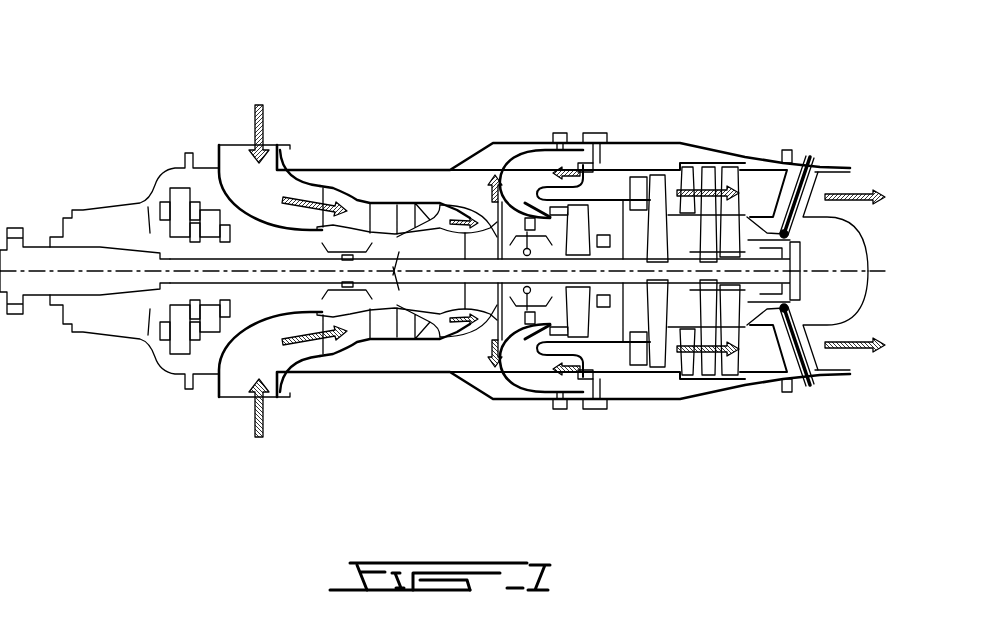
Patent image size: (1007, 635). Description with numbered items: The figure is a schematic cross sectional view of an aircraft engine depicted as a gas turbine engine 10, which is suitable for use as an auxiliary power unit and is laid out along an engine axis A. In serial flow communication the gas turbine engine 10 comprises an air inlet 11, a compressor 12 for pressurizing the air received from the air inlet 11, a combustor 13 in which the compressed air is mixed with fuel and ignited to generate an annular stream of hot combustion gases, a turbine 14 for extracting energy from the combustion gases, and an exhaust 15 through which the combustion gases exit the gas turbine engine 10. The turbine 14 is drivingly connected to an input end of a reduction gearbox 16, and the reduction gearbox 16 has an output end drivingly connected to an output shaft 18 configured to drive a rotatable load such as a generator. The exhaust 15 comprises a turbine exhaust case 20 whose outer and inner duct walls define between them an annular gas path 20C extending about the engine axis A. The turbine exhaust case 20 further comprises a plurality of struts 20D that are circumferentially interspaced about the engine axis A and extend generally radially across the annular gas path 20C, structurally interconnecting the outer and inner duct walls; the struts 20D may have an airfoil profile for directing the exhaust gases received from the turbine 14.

The gas turbine engine 10 is at (648, 80).
The air inlet 11 is at (238, 158).
The compressor 12 is at (384, 350).
The combustor 13 is at (535, 163).
The turbine 14 is at (699, 135).
The exhaust 15 is at (808, 145).
The reduction gearbox 16 is at (168, 362).
The output shaft 18 is at (38, 254).
The turbine exhaust case 20 is at (836, 162).
The annular gas path 20C is at (776, 195).
The struts 20D is at (820, 182).
The engine axis A is at (882, 270).